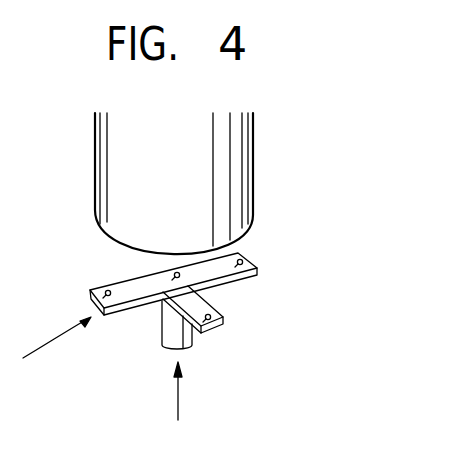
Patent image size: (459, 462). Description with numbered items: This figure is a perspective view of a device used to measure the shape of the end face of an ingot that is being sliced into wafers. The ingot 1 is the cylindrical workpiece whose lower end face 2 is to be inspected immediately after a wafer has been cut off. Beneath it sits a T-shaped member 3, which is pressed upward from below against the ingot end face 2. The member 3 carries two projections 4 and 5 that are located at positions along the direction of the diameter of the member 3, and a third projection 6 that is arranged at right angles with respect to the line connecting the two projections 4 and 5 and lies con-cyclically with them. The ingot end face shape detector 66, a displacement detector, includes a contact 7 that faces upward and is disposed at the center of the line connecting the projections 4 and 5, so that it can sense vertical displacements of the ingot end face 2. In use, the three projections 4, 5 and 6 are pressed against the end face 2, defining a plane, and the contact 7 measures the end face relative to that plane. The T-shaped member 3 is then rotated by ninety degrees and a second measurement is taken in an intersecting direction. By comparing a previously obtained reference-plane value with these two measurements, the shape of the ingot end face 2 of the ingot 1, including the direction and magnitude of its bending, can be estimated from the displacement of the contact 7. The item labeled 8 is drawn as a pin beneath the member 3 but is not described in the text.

The ingot 1 is at (205, 168).
The end face 2 is at (247, 237).
The T-shaped member 3 is at (258, 278).
The projection 4 is at (95, 293).
The projection 5 is at (258, 257).
The projection 6 is at (222, 313).
The contact 7 is at (172, 275).
The pin 8 is at (173, 327).
The ingot end face shape detector 66 is at (49, 355).